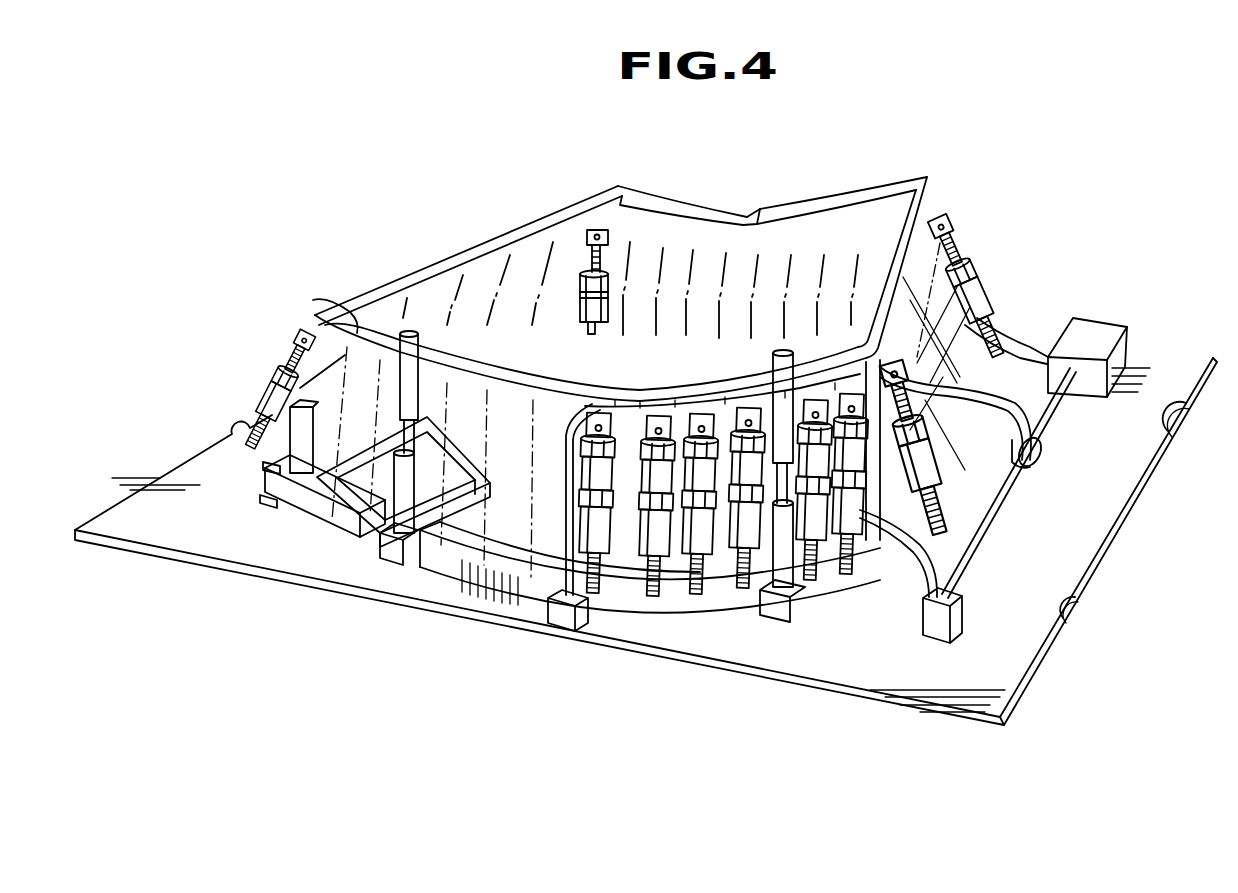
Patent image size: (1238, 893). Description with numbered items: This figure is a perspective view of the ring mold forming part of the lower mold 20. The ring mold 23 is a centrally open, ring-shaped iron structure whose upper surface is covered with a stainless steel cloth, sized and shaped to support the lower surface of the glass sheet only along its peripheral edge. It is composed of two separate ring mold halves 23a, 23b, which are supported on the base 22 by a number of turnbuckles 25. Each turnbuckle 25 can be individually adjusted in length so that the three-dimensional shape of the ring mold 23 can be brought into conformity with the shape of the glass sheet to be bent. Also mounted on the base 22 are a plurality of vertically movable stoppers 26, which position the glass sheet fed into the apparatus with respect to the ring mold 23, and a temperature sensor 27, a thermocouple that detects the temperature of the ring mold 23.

The lower mold 20 is at (548, 190).
The base 22 is at (287, 553).
The ring mold 23 is at (716, 200).
The ring mold half 23a is at (448, 270).
The ring mold half 23b is at (935, 187).
The turnbuckle 25 is at (985, 290).
The stopper 26 is at (350, 315).
The temperature sensor 27 is at (873, 567).